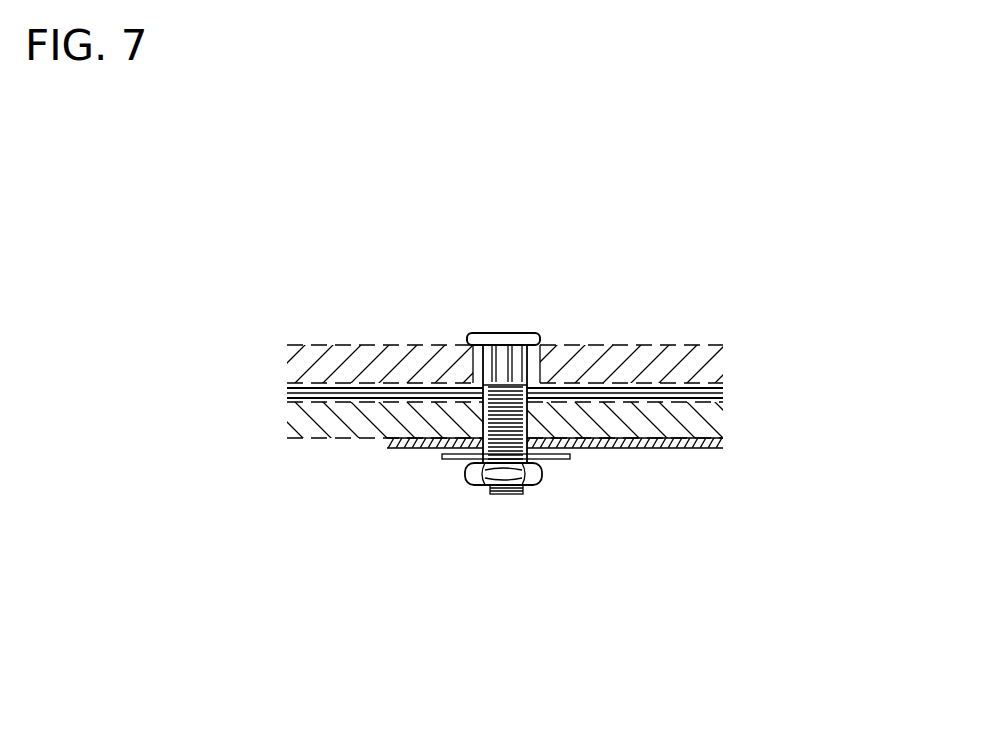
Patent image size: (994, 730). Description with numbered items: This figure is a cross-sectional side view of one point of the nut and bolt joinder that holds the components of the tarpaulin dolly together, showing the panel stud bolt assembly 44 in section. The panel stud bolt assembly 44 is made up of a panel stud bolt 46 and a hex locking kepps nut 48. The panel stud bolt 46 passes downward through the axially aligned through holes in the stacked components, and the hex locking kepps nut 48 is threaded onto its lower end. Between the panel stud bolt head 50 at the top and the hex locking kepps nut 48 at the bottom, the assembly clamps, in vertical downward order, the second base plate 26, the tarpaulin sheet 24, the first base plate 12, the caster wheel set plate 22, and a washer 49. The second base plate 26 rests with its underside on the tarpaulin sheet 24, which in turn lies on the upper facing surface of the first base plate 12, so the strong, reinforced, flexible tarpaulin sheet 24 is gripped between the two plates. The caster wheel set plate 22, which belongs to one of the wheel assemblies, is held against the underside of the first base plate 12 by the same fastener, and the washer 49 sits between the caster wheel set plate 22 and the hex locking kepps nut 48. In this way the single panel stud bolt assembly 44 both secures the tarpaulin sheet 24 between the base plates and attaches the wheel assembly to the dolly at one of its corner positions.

The first base plate 12 is at (717, 443).
The caster wheel set plate 22 is at (397, 445).
The tarpaulin sheet 24 is at (717, 385).
The second base plate 26 is at (640, 345).
The panel stud bolt assembly 44 is at (446, 488).
The panel stud bolt 46 is at (551, 356).
The hex locking kepps nut 48 is at (530, 475).
The washer 49 is at (562, 460).
The panel stud bolt head 50 is at (492, 333).